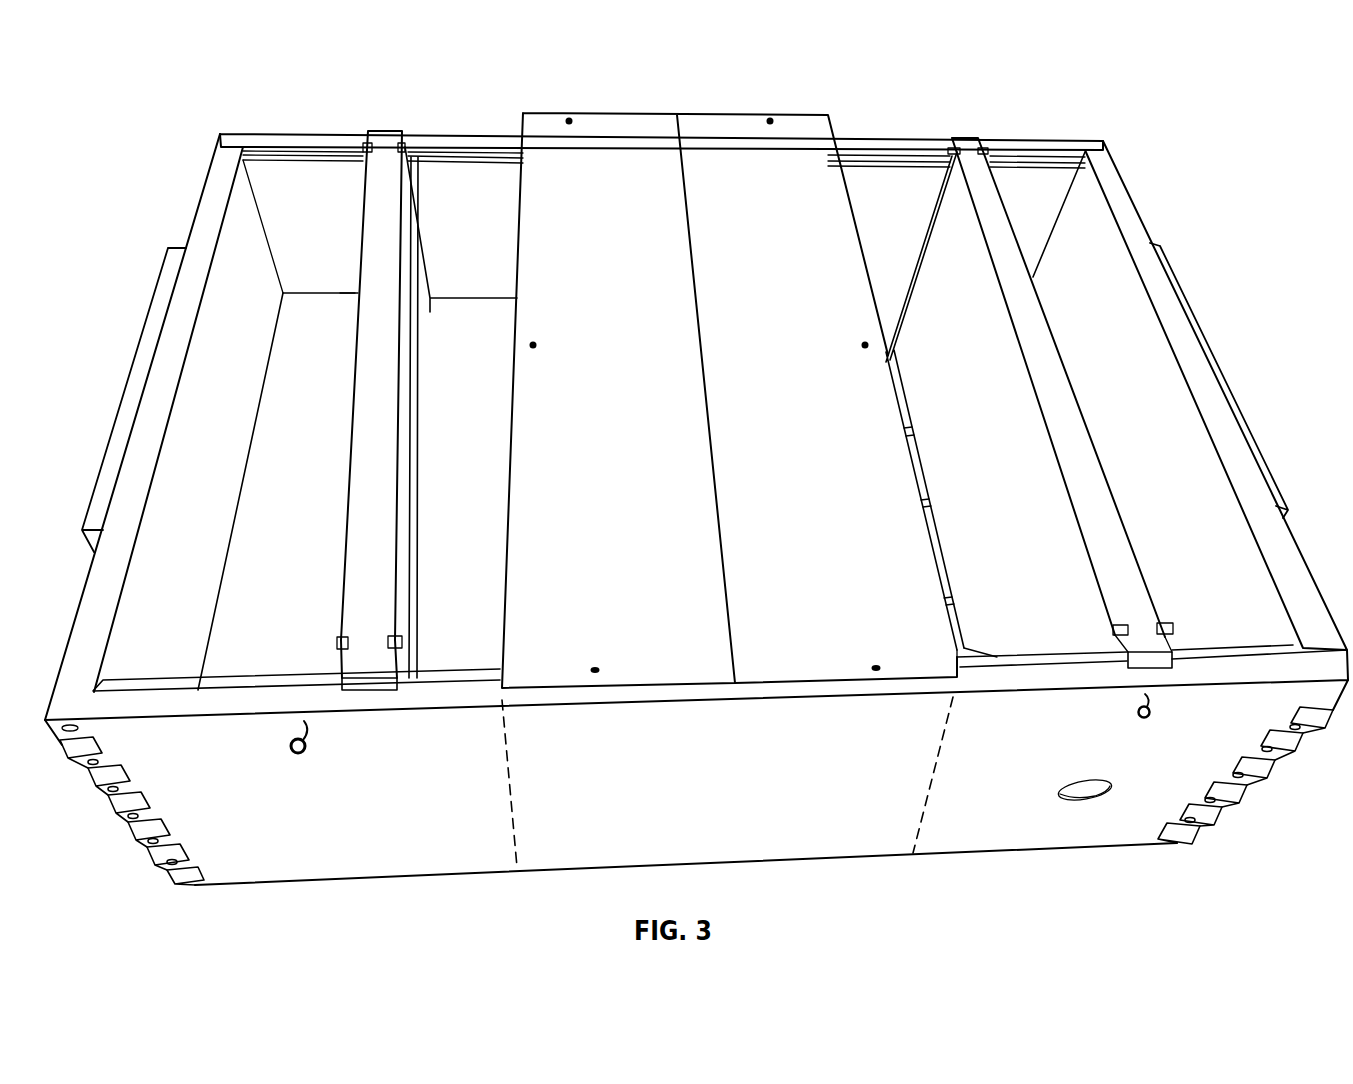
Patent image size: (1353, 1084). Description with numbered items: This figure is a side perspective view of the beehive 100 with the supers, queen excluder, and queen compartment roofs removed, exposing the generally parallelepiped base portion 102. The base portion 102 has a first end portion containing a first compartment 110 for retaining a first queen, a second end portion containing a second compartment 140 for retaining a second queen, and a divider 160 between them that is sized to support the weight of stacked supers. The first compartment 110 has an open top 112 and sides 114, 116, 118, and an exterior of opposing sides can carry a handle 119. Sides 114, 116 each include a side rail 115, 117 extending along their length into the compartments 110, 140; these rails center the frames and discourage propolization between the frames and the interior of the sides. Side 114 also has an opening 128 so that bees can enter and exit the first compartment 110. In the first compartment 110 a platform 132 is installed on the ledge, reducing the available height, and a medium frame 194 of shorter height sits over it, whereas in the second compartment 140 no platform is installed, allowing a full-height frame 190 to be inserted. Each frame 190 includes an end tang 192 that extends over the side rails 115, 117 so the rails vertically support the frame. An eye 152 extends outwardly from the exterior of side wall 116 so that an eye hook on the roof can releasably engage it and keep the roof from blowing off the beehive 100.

The beehive 100 is at (1128, 101).
The base portion 102 is at (248, 143).
The first compartment 110 is at (243, 380).
The open top 112 is at (438, 190).
The side 114 is at (293, 144).
The side rail 115 is at (367, 139).
The side 116 is at (867, 213).
The side rail 117 is at (1015, 157).
The side 118 is at (195, 236).
The handle 119 is at (137, 345).
The opening 128 is at (347, 292).
The platform 132 is at (317, 391).
The second compartment 140 is at (1047, 192).
The eye 152 is at (312, 749).
The divider 160 is at (595, 125).
The frame 190 is at (970, 138).
The end tang 192 is at (952, 142).
The medium frame 194 is at (368, 342).